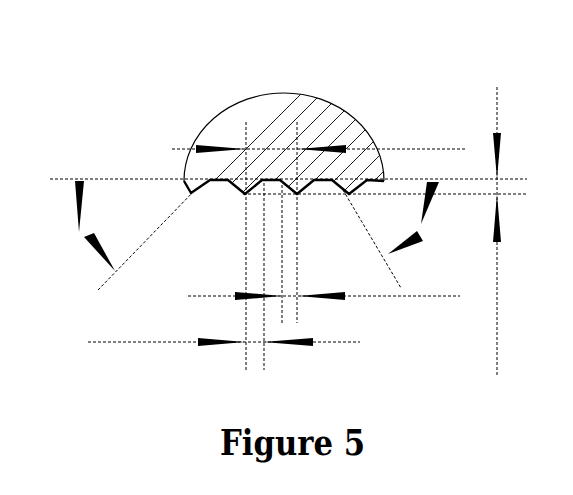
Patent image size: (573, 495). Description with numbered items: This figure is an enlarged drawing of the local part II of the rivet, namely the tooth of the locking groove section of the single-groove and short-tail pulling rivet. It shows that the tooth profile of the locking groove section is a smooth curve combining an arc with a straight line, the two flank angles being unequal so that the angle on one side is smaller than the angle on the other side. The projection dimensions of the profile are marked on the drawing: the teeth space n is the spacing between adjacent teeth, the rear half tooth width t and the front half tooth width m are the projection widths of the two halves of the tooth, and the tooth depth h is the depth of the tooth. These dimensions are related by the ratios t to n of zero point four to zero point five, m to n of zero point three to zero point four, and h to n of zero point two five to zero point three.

The teeth space n is at (319, 112).
The tooth depth h is at (462, 231).
The rear half tooth width t is at (274, 314).
The front half tooth width m is at (436, 259).
The local part II is at (166, 65).